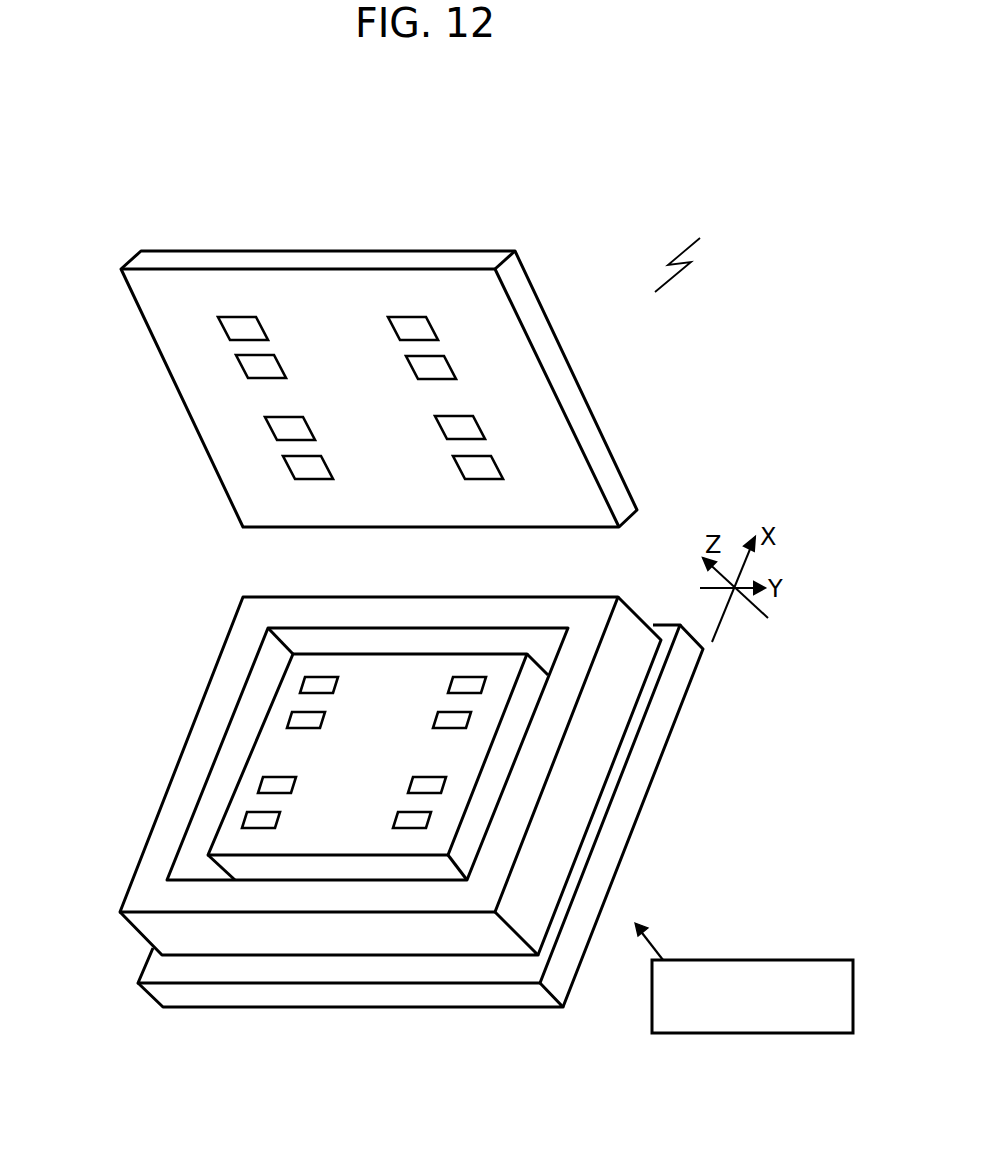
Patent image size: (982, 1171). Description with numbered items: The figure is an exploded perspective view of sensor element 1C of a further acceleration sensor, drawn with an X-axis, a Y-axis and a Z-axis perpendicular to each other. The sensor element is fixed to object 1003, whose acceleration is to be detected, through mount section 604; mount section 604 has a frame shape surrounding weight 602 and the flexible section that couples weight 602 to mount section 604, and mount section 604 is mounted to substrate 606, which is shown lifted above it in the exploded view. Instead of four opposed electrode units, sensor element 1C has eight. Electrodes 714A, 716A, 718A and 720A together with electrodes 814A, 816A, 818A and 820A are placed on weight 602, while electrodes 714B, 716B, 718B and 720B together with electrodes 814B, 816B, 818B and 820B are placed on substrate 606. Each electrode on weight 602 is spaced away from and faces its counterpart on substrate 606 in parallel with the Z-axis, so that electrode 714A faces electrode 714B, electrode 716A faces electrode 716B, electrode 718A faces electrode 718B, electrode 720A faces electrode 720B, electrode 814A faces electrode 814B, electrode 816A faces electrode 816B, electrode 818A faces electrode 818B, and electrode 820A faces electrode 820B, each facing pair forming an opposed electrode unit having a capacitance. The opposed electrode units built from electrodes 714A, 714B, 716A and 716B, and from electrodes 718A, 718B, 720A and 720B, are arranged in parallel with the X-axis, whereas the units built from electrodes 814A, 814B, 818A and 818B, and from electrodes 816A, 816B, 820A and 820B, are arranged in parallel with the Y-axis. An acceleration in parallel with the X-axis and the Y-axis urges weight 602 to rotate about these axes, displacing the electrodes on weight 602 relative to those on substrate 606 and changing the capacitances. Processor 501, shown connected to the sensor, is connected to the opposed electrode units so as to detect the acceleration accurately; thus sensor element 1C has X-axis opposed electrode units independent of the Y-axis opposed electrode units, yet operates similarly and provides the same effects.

The substrate 606 is at (572, 523).
The mount section 604 is at (238, 620).
The weight 602 is at (342, 840).
The object 1003 is at (138, 973).
The processor 501 is at (727, 960).
The sensor element 1C is at (683, 250).
The electrode 814B is at (233, 334).
The electrode 714B is at (260, 368).
The electrode 716B is at (277, 430).
The electrode 816B is at (293, 475).
The electrode 818B is at (415, 328).
The electrode 718B is at (438, 363).
The electrode 720B is at (467, 429).
The electrode 820B is at (485, 471).
The electrode 816A is at (305, 678).
The electrode 716A is at (293, 717).
The electrode 714A is at (268, 782).
The electrode 814A is at (247, 820).
The electrode 820A is at (483, 685).
The electrode 720A is at (463, 722).
The electrode 718A is at (425, 785).
The electrode 818A is at (410, 822).